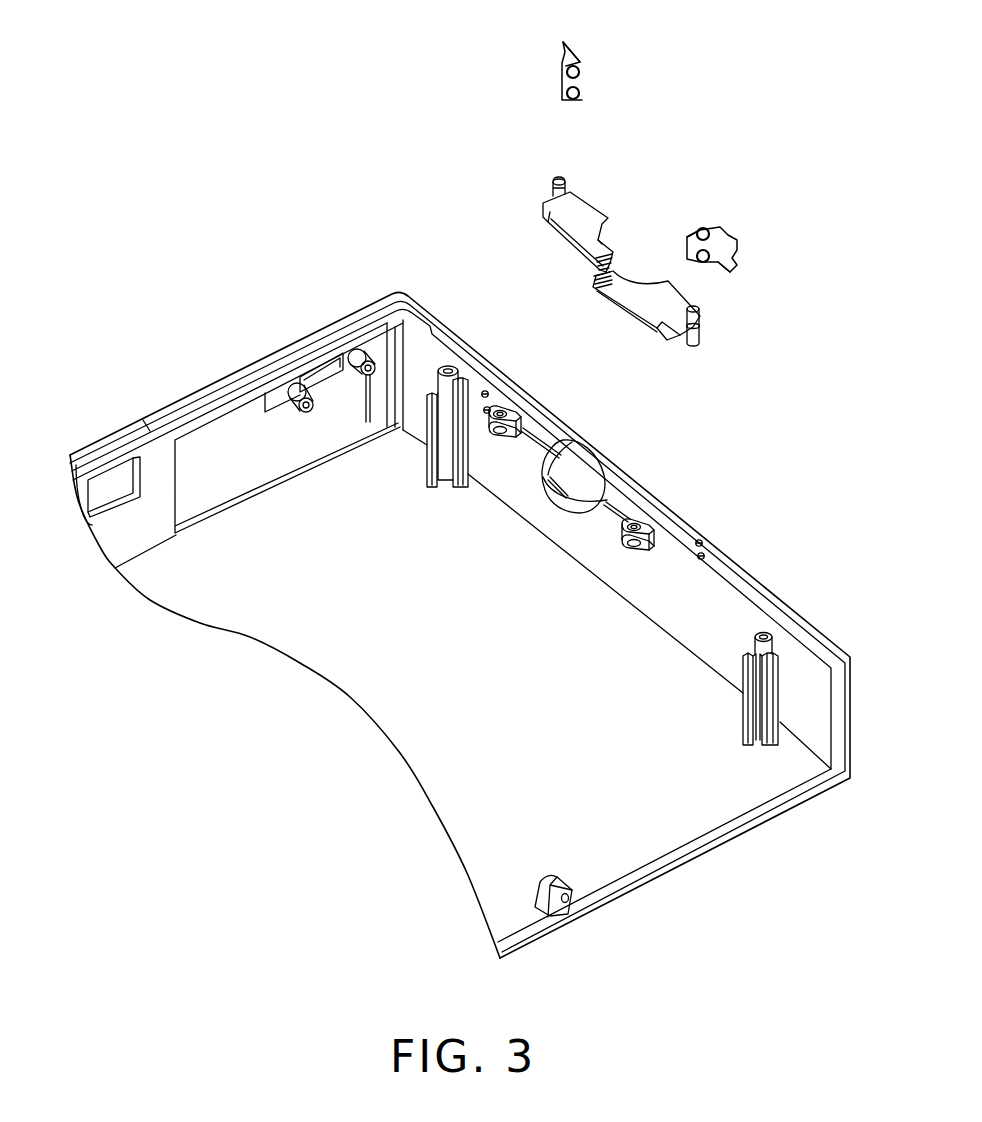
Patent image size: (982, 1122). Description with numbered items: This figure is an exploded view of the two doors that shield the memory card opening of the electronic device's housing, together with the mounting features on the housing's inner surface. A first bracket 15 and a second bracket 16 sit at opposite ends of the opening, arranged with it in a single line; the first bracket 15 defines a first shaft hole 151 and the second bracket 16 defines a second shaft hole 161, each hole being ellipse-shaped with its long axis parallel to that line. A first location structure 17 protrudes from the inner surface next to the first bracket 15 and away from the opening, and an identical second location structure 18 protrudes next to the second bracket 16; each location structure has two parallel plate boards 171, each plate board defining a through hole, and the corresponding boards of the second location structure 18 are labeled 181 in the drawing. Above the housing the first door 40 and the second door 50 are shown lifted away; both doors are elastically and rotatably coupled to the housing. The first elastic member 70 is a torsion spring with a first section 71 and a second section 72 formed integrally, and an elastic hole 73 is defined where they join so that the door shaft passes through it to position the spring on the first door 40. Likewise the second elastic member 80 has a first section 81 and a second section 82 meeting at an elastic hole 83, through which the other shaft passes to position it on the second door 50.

The first bracket 15 is at (640, 530).
The first shaft hole 151 is at (648, 530).
The second bracket 16 is at (510, 416).
The second shaft hole 161 is at (505, 415).
The first location structure 17 is at (777, 559).
The plate boards 171 is at (703, 544).
The second location structure 18 is at (516, 330).
The screw 181 is at (568, 292).
The first door 40 is at (710, 345).
The second door 50 is at (525, 191).
The first elastic member 70 is at (742, 246).
The first section 71 is at (741, 273).
The second section 72 is at (688, 240).
The elastic hole 73 is at (700, 228).
The second elastic member 80 is at (559, 78).
The first section 81 is at (554, 44).
The second section 82 is at (585, 100).
The elastic hole 83 is at (582, 72).